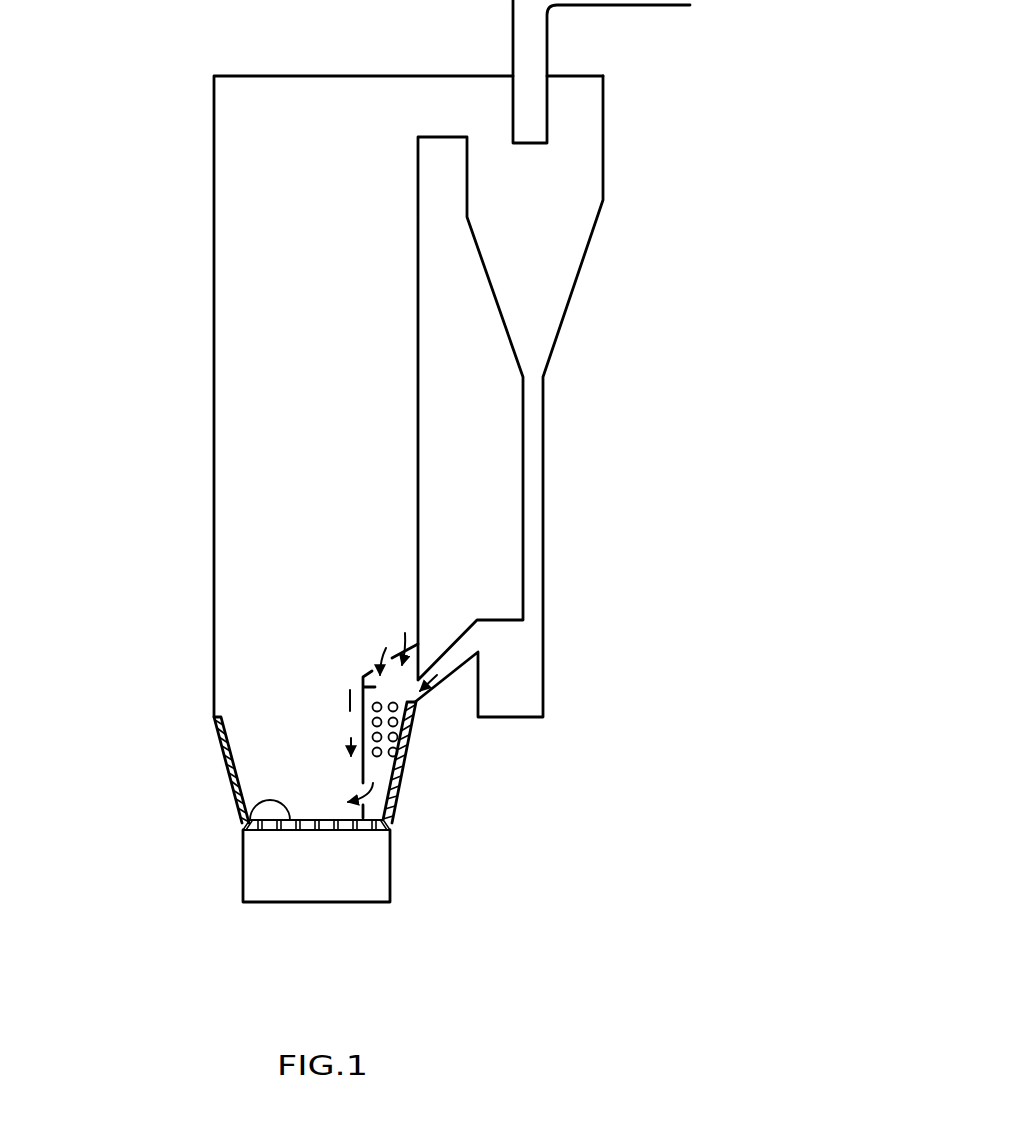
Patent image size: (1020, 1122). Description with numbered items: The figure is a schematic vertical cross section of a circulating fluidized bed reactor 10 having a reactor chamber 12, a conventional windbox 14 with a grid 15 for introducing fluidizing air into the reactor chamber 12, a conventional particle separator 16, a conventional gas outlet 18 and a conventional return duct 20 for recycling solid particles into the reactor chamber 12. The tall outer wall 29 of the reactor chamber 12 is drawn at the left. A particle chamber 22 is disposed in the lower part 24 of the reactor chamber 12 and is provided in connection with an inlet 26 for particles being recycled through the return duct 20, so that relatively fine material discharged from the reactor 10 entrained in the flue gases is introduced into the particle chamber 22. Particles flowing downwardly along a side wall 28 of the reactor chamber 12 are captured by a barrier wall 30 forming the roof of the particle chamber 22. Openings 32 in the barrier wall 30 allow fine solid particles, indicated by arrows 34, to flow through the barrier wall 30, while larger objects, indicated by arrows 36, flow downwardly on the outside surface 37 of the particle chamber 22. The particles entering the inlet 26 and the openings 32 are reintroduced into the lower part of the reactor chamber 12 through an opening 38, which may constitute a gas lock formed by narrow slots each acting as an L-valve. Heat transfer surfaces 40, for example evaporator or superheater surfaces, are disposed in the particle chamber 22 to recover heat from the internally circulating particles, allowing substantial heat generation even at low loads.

The circulating fluidized bed reactor 10 is at (165, 155).
The reactor chamber 12 is at (328, 400).
The windbox 14 is at (328, 888).
The grid 15 is at (243, 823).
The particle separator 16 is at (548, 230).
The gas outlet 18 is at (533, 58).
The return duct 20 is at (533, 500).
The particle chamber 22 is at (375, 687).
The lower part 24 is at (278, 748).
The inlet 26 is at (422, 708).
The side wall 28 is at (418, 443).
The outer wall of combustion chamber 29 is at (214, 550).
The barrier wall 30 is at (398, 660).
The openings 32 is at (410, 640).
The arrows 34 is at (407, 583).
The arrows 36 is at (368, 655).
The outside surface 37 is at (363, 714).
The opening 38 is at (398, 800).
The heat transfer surfaces 40 is at (396, 752).